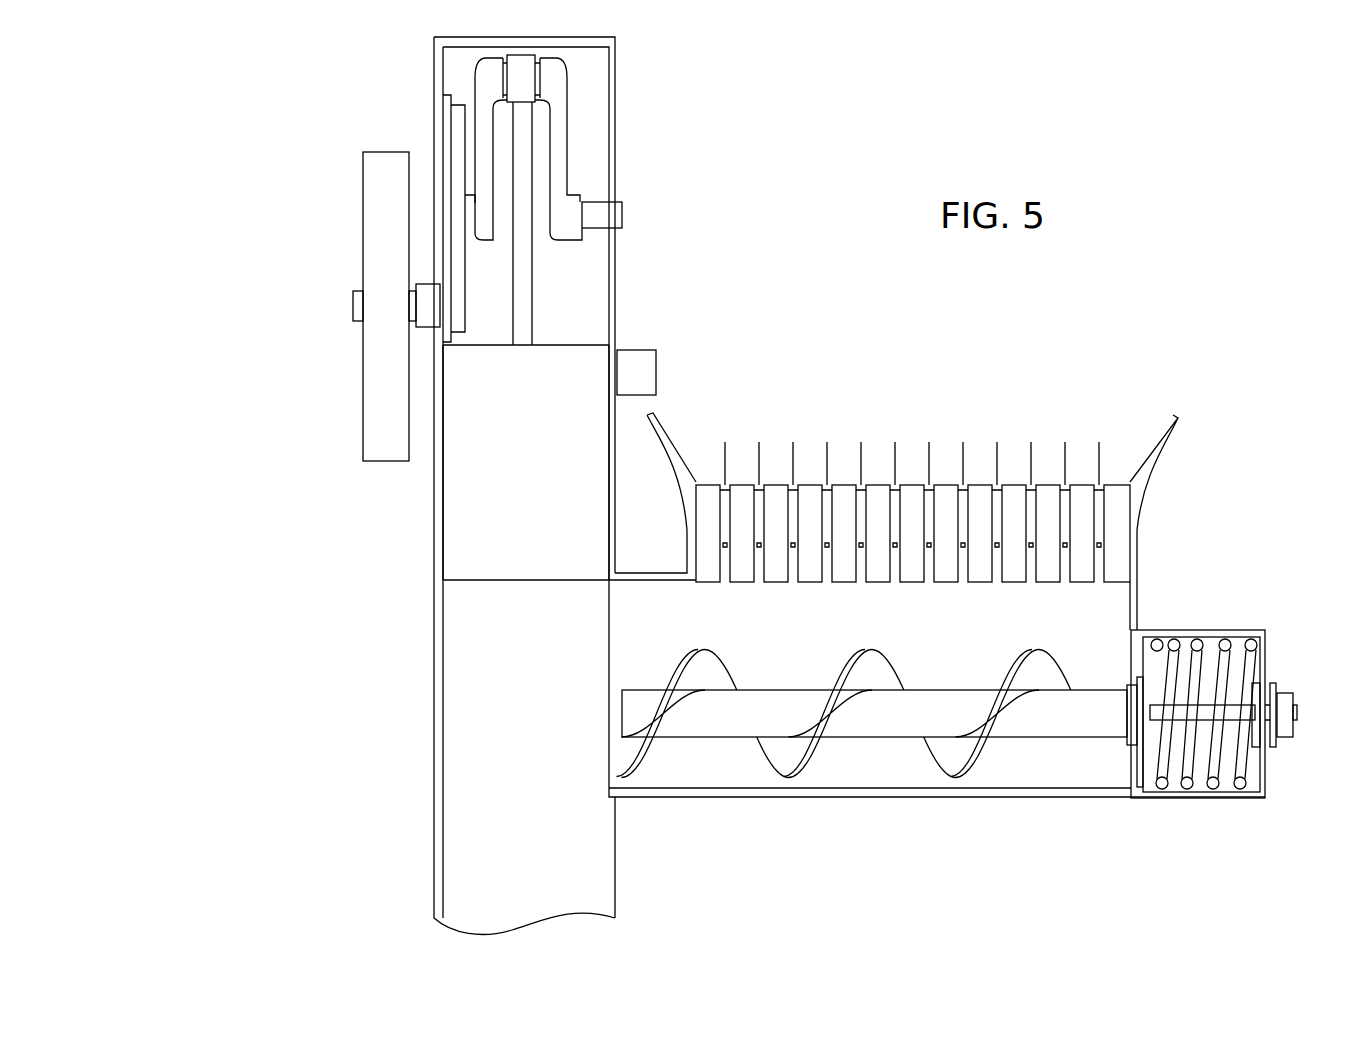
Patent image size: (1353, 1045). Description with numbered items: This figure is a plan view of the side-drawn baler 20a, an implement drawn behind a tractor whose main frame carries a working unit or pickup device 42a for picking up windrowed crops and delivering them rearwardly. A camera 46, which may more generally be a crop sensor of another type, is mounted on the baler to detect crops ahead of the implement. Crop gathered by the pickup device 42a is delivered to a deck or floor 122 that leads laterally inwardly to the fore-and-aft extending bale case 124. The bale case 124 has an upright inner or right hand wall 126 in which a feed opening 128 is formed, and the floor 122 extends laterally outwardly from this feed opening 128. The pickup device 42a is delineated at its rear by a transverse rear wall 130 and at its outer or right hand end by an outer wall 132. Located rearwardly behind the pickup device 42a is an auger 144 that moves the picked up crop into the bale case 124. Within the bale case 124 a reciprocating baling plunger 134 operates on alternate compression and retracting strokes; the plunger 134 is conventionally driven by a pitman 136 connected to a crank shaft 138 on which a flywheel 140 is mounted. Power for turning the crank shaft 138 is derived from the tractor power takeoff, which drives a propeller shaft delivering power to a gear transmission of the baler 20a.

The side-drawn baler 20a is at (1102, 308).
The working unit 42a is at (1118, 403).
The camera 46 is at (636, 377).
The floor 122 is at (1040, 627).
The bale case 124 is at (437, 563).
The right hand wall 126 is at (613, 324).
The feed opening 128 is at (608, 647).
The rear wall 130 is at (823, 792).
The outer wall 132 is at (1133, 625).
The baling plunger 134 is at (535, 502).
The pitman 136 is at (518, 270).
The crank shaft 138 is at (560, 145).
The flywheel 140 is at (385, 237).
The auger 144 is at (960, 750).